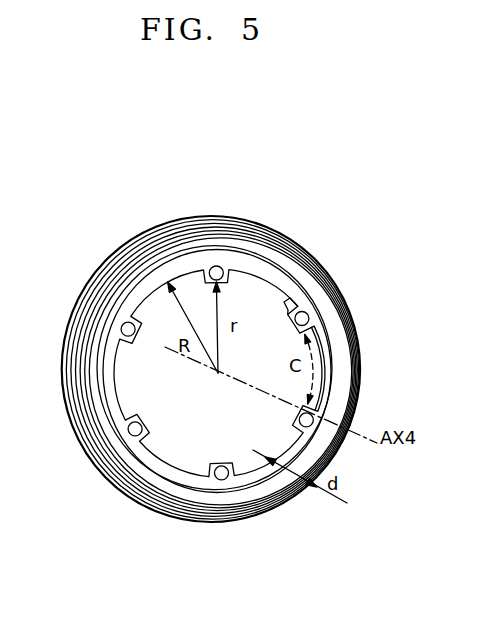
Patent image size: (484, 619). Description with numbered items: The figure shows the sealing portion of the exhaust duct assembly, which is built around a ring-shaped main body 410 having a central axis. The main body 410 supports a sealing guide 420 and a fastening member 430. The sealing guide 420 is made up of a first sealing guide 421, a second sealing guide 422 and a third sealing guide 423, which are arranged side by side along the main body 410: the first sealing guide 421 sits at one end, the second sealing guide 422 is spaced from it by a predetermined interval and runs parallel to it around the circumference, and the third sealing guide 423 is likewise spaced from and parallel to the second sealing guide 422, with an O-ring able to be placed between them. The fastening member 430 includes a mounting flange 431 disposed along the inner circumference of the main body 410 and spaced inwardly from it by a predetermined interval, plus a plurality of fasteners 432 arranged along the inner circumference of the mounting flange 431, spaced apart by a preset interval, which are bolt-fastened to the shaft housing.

The main body 410 is at (223, 500).
The sealing guide 420 is at (189, 332).
The first sealing guide 421 is at (138, 242).
The second sealing guide 422 is at (110, 282).
The third sealing guide 423 is at (100, 317).
The fastening member 430 is at (351, 297).
The mounting flange 431 is at (300, 306).
The fastener 432 is at (318, 322).